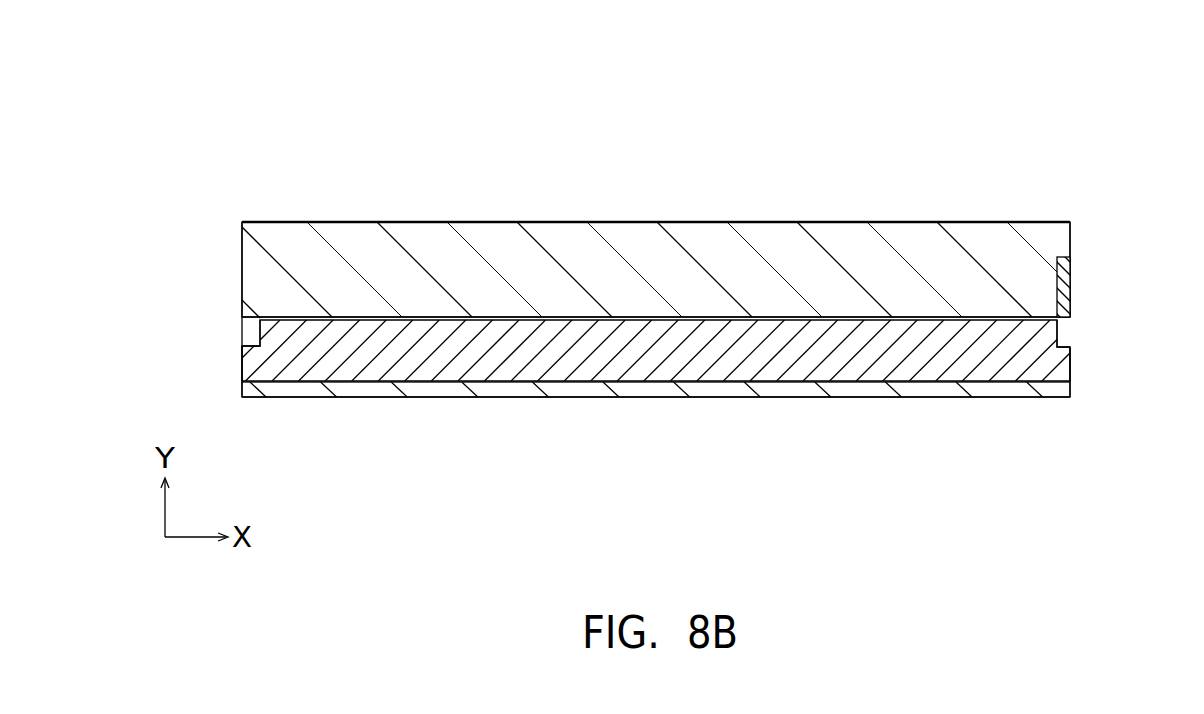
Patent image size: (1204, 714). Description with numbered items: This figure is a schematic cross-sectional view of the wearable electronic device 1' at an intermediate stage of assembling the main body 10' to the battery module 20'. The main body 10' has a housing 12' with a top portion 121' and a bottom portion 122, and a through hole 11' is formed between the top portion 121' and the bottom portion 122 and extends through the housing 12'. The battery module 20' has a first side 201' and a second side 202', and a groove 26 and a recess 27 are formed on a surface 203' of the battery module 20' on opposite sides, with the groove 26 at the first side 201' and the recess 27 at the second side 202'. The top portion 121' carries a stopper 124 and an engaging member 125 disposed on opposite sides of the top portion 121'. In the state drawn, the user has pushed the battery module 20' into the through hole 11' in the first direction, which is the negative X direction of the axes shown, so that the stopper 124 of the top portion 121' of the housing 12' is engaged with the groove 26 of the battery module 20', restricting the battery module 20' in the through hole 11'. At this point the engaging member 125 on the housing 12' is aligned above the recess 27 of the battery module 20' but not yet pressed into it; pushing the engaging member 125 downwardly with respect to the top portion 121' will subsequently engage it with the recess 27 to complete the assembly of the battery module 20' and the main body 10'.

The wearable electronic device 1' is at (569, 219).
The main body 10' is at (656, 228).
The through hole 11' is at (656, 227).
The housing 12' is at (79, 330).
The top portion 121' is at (603, 269).
The bottom portion 122 is at (260, 392).
The stopper 124 is at (253, 320).
The engaging member 125 is at (1058, 288).
The groove 26 is at (253, 345).
The recess 27 is at (1058, 335).
The battery module 20' is at (654, 304).
The first side 201' is at (1103, 408).
The second side 202' is at (200, 363).
The surface 203' is at (661, 260).